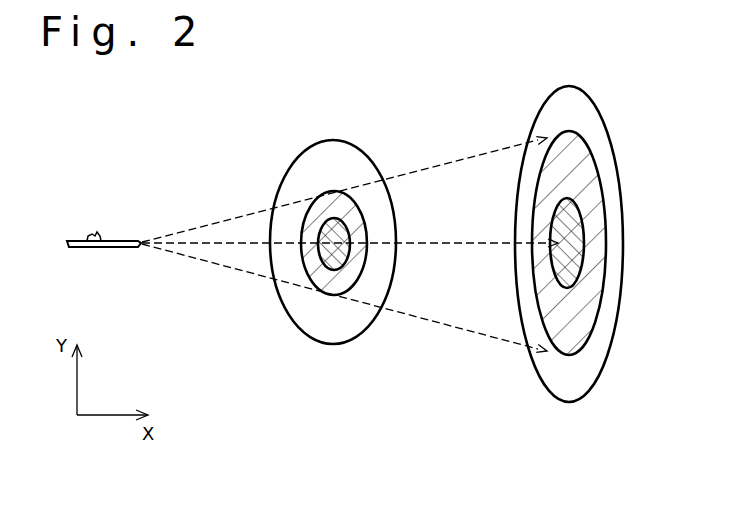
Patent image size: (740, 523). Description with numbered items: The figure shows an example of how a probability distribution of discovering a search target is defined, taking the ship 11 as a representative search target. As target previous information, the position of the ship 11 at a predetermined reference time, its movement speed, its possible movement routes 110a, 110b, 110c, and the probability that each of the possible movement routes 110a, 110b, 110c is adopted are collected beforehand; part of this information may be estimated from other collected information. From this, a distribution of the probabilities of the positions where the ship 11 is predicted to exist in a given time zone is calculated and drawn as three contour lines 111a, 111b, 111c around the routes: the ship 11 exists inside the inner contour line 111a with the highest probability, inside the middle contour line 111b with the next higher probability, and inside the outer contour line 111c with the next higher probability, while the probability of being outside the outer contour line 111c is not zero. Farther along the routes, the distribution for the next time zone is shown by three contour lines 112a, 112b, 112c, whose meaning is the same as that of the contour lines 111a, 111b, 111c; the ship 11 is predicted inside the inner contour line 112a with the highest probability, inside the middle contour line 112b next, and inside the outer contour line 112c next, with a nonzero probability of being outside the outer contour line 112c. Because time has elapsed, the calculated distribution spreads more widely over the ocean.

The ship 11 is at (120, 249).
The possible movement route 110a is at (167, 237).
The possible movement route 110b is at (212, 247).
The possible movement route 110c is at (250, 277).
The inner contour line 111a is at (318, 284).
The middle contour line 111b is at (343, 297).
The outer contour line 111c is at (374, 322).
The inner contour line 112a is at (553, 326).
The middle contour line 112b is at (580, 356).
The outer contour line 112c is at (604, 366).